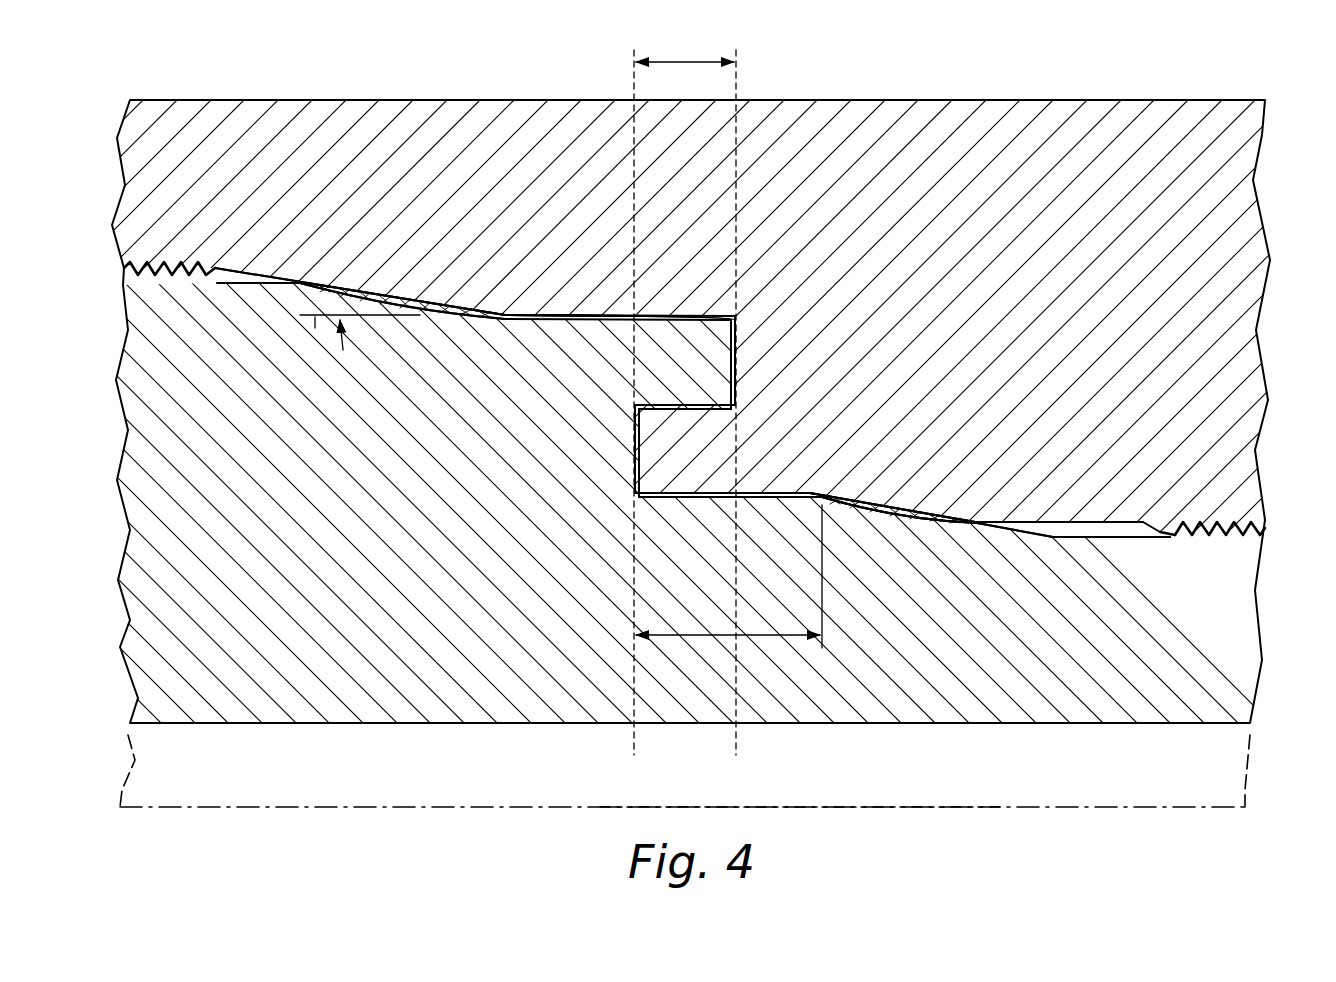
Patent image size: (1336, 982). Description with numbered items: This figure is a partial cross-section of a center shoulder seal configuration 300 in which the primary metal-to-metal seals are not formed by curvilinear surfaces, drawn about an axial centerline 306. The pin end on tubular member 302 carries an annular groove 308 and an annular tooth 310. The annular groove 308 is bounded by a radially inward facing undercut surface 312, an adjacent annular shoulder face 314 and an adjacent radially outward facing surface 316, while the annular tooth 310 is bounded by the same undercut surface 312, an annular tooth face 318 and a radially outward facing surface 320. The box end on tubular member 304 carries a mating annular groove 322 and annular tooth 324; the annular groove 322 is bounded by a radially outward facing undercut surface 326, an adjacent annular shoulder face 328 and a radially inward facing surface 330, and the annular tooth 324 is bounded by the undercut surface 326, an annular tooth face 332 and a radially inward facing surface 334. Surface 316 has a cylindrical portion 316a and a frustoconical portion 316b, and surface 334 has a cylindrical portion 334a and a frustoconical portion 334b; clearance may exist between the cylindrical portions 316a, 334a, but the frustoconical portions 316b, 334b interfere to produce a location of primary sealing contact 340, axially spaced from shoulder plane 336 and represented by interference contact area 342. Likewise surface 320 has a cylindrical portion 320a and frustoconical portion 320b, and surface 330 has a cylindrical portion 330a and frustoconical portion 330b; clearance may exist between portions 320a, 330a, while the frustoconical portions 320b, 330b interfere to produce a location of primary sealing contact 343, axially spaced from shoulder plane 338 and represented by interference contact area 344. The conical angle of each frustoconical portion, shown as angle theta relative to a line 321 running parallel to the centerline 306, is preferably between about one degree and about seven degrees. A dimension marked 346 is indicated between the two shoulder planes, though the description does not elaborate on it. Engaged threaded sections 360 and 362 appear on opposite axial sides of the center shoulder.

The center shoulder seal configuration 300 is at (128, 75).
The tubular member 302 is at (475, 677).
The tubular member 304 is at (1010, 125).
The axial centerline 306 is at (1000, 805).
The annular groove 308 is at (632, 440).
The annular tooth 310 is at (683, 347).
The radially inward facing undercut surface 312 is at (665, 403).
The annular shoulder face 314 is at (655, 432).
The radially outward facing surface 316 is at (720, 500).
The cylindrical portion 316a is at (667, 500).
The frustoconical portion 316b is at (927, 517).
The annular tooth face 318 is at (730, 370).
The radially outward facing surface 320 is at (592, 315).
The cylindrical portion 320a is at (555, 325).
The frustoconical portion 320b is at (393, 227).
The line 321 is at (313, 317).
The annular groove 322 is at (738, 360).
The annular tooth 324 is at (633, 492).
The radially outward facing undercut surface 326 is at (740, 413).
The annular shoulder face 328 is at (740, 335).
The radially inward facing surface 330 is at (724, 308).
The cylindrical portion 330a is at (667, 312).
The frustoconical portion 330b is at (413, 258).
The annular tooth face 332 is at (640, 425).
The radially inward facing surface 334 is at (748, 490).
The cylindrical portion 334a is at (705, 478).
The frustoconical portion 334b is at (870, 507).
The shoulder plane 336 is at (634, 82).
The shoulder plane 338 is at (738, 82).
The location of primary sealing contact 340 is at (885, 497).
The interference contact area 342 is at (912, 517).
The location of primary sealing contact 343 is at (455, 292).
The interference contact area 344 is at (405, 298).
The tab width 346 is at (695, 62).
The engaged threaded section 360 is at (1243, 525).
The engaged threaded section 362 is at (172, 283).